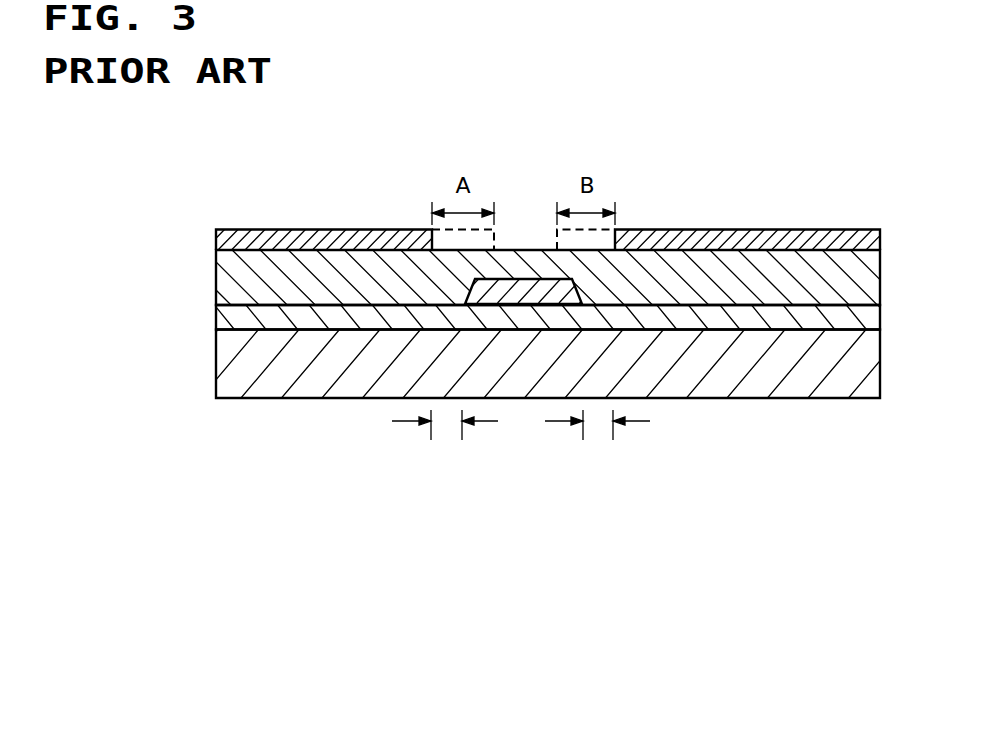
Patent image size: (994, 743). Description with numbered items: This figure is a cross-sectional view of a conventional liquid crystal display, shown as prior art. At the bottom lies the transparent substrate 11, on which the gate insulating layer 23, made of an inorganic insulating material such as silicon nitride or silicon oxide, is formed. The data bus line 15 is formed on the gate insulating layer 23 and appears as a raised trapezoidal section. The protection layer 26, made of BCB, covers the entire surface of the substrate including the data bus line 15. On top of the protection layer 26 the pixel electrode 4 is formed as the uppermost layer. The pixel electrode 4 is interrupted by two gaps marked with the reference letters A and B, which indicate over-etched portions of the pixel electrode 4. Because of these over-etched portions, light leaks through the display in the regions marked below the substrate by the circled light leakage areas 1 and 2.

The pixel electrode 4 is at (760, 240).
The gate insulating layer 23 is at (808, 318).
The protection layer 26 is at (220, 276).
The data bus line 15 is at (542, 292).
The transparent substrate 11 is at (757, 377).
The light leakage area 1 is at (445, 442).
The light leakage area 2 is at (597, 442).